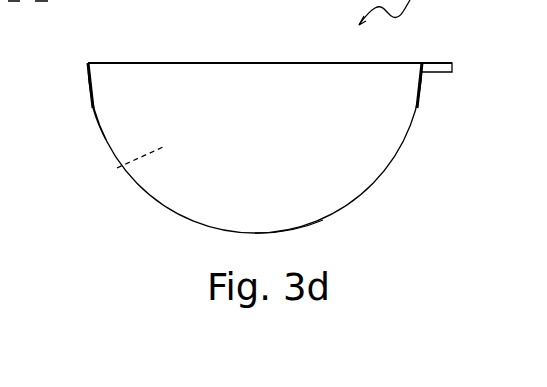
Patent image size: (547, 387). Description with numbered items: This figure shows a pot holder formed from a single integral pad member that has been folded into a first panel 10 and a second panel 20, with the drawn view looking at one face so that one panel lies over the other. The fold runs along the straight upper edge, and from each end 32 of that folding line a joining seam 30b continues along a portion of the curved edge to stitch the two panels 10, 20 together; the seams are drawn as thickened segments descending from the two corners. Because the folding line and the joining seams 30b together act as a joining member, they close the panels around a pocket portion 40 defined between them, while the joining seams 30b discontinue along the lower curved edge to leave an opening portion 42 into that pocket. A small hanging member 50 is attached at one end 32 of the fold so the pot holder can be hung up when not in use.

The first panel 10 is at (275, 148).
The second panel 20 is at (104, 138).
The joining seam 30b is at (88, 65).
The end of the folding line 32 is at (248, 56).
The pocket portion 40 is at (122, 163).
The opening portion 42 is at (323, 220).
The hanging member 50 is at (452, 70).